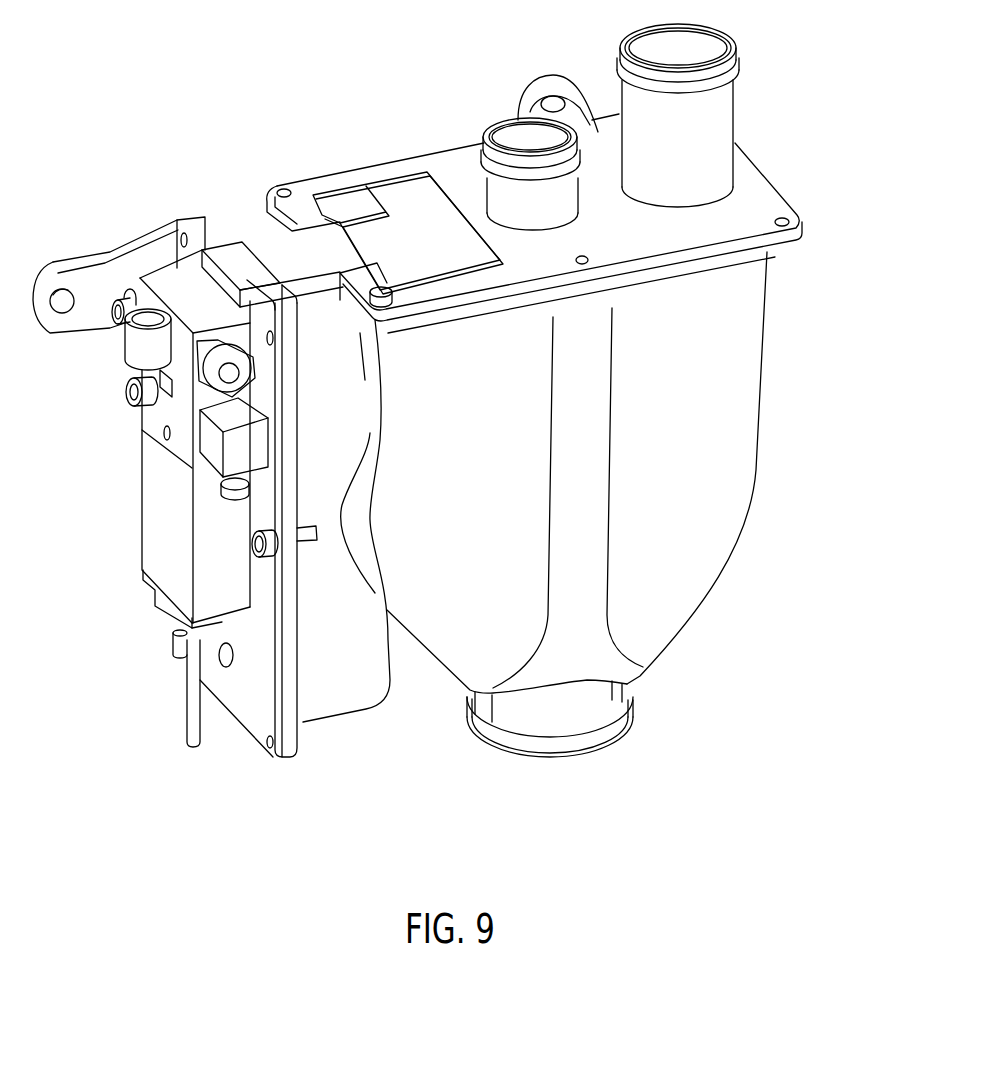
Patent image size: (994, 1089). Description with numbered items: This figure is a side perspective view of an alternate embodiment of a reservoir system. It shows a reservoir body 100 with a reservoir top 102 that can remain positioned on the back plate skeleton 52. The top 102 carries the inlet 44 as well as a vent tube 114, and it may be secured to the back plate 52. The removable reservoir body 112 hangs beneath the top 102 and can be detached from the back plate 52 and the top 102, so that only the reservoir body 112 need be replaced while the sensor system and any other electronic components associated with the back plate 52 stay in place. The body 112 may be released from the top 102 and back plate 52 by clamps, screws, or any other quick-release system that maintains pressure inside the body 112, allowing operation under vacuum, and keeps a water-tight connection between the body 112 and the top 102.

The inlet 44 is at (510, 140).
The vent tube 114 is at (737, 74).
The reservoir top 102 is at (756, 203).
The reservoir body 100 is at (670, 420).
The reservoir body 112 is at (485, 490).
The back plate skeleton 52 is at (254, 702).